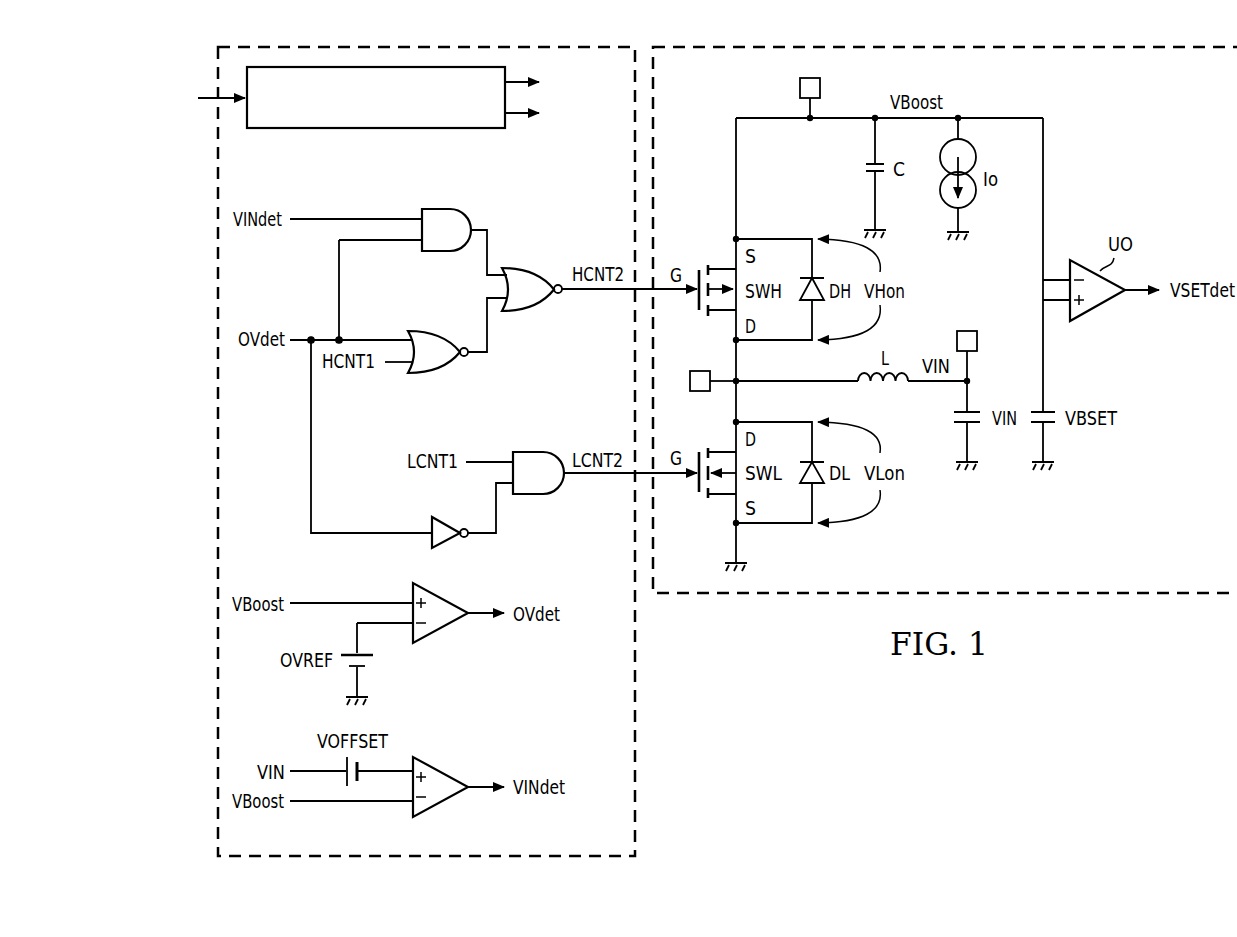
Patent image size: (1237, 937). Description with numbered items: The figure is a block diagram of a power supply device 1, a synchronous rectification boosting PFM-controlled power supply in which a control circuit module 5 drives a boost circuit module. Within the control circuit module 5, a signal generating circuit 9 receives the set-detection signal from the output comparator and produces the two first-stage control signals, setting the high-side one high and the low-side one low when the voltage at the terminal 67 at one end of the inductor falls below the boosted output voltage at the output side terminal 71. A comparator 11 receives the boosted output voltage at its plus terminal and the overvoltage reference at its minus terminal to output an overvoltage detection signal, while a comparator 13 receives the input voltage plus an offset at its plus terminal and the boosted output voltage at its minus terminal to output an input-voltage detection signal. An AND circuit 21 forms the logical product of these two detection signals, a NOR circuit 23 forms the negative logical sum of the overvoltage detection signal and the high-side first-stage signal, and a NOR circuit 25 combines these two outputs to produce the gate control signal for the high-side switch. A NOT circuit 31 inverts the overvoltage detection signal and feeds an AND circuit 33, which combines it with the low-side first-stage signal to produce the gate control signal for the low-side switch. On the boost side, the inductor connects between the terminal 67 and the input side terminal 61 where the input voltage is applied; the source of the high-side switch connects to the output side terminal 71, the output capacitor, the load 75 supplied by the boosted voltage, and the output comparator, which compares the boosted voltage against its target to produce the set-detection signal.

The power supply device 1 is at (1147, 657).
The control circuit module 5 is at (216, 390).
The signal generating circuit 9 is at (375, 129).
The comparator 11 is at (447, 631).
The comparator 13 is at (447, 805).
The AND circuit 21 is at (441, 208).
The NOR circuit 23 is at (428, 330).
The NOR circuit 25 is at (520, 267).
The NOT circuit 31 is at (447, 541).
The AND circuit 33 is at (530, 495).
The input side terminal 61 is at (975, 329).
The terminal 67 is at (700, 369).
The output side terminal 71 is at (823, 86).
The load 75 is at (978, 160).